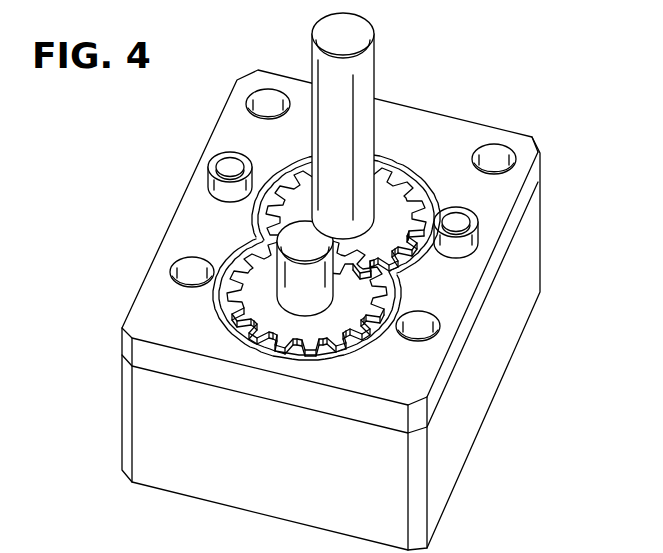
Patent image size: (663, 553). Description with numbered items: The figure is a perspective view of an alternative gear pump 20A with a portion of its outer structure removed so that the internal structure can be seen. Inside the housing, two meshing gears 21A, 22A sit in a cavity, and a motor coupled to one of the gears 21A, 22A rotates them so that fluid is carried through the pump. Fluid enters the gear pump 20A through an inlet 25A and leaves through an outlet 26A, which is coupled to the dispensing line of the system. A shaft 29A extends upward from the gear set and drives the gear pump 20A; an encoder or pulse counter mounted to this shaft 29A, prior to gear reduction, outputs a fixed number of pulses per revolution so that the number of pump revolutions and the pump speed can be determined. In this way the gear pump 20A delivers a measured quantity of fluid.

The gear pump 20A is at (537, 60).
The gear 21A is at (402, 207).
The gear 22A is at (217, 304).
The inlet 25A is at (245, 238).
The outlet 26A is at (403, 272).
The shaft 29A is at (374, 72).